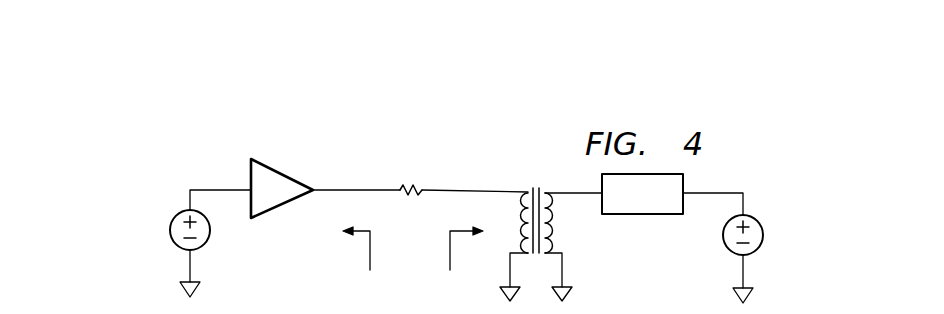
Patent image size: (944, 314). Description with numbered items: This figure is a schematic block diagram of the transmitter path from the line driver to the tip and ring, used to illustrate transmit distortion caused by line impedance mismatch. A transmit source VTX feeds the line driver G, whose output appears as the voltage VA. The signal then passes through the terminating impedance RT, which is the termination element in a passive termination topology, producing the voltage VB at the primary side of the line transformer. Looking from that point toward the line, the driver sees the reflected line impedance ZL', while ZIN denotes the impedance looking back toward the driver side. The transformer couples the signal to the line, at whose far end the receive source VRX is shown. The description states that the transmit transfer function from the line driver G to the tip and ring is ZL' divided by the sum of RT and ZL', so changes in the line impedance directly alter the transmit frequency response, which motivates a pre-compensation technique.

The transmit voltage source VTX is at (192, 243).
The line driver G is at (282, 164).
The voltage at line driver output VA is at (356, 171).
The terminating impedance RT is at (411, 177).
The voltage at transformer primary VB is at (476, 172).
The input impedance looking toward driver ZIN is at (364, 266).
The reflected line impedance ZL' is at (461, 266).
The receive voltage source VRX is at (742, 248).